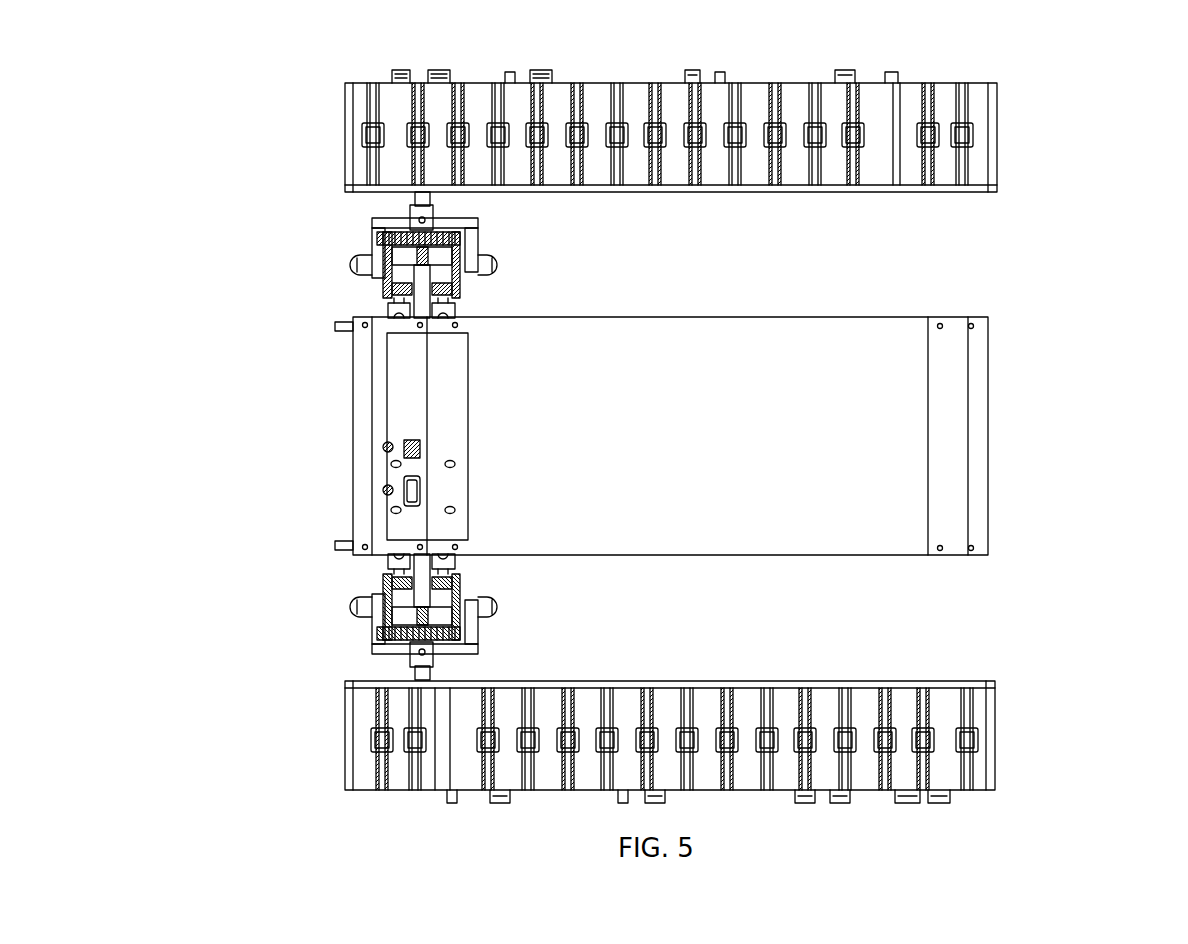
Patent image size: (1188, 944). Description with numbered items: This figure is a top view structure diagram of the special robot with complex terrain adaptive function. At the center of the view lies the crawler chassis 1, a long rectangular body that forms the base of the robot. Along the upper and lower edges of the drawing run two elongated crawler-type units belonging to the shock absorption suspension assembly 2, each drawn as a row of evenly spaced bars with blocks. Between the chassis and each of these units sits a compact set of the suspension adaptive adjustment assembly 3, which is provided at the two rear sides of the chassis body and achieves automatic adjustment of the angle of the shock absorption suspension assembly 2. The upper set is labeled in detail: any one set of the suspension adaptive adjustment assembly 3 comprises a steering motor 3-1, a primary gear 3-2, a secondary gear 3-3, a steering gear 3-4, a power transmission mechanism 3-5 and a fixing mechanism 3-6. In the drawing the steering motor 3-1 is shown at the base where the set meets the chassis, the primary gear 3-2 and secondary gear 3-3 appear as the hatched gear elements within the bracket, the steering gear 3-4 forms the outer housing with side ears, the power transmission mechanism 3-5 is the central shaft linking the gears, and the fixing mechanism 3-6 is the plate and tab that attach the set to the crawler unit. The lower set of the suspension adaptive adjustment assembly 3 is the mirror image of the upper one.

The crawler chassis 1 is at (990, 437).
The shock absorption suspension assembly 2 is at (990, 112).
The suspension adaptive adjustment assembly 3 is at (414, 398).
The steering motor 3-1 is at (372, 318).
The primary gear 3-2 is at (455, 290).
The secondary gear 3-3 is at (377, 232).
The steering gear 3-4 is at (478, 236).
The power transmission mechanism 3-5 is at (395, 292).
The fixing mechanism 3-6 is at (372, 218).